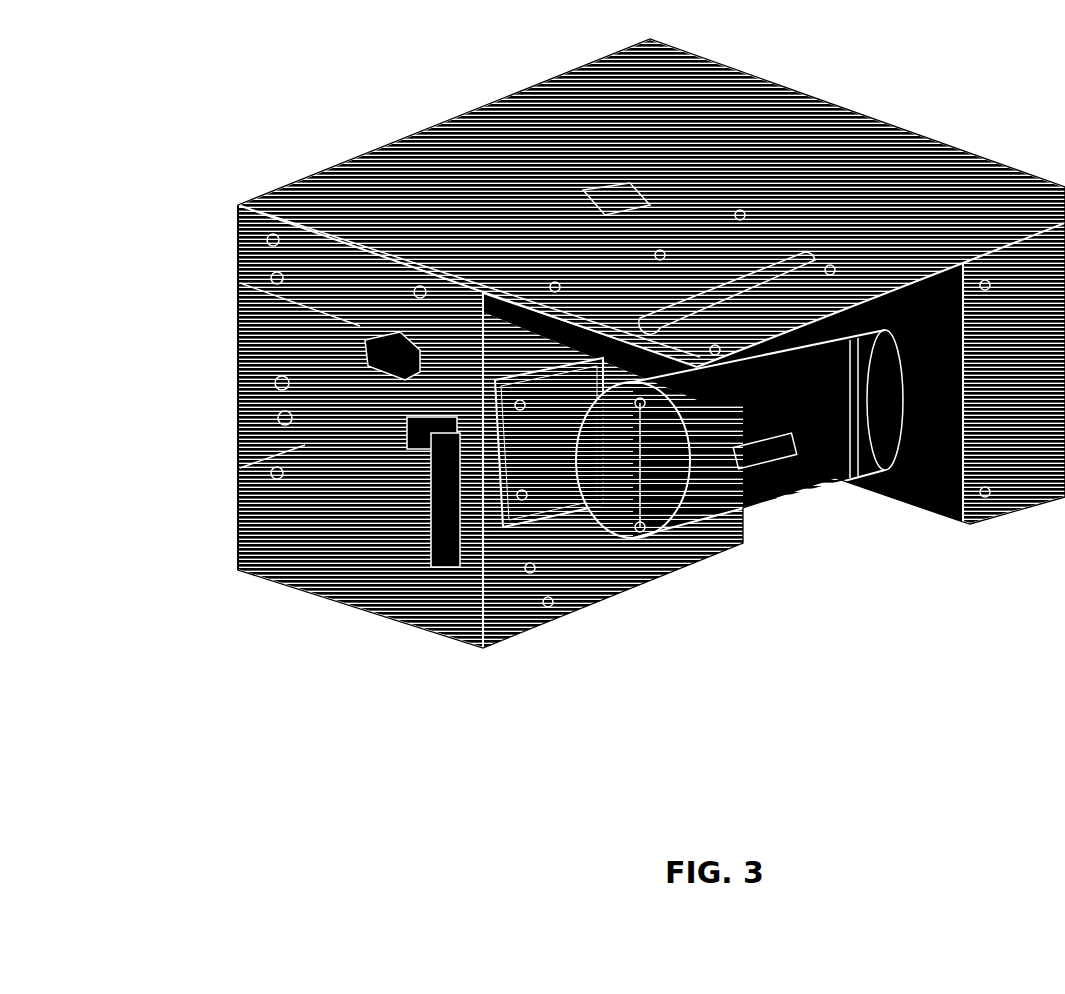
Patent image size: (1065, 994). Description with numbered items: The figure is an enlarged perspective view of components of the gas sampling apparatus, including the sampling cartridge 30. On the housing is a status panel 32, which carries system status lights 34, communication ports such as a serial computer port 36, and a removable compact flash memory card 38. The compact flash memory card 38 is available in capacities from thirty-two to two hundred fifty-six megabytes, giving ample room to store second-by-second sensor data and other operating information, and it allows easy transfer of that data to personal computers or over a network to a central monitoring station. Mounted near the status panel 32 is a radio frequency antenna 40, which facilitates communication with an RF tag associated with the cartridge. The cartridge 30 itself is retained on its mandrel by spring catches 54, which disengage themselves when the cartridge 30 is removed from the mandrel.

The cartridge 30 is at (786, 497).
The status panel 32 is at (240, 468).
The system status lights 34 is at (270, 379).
The RS-232 computer port 36 is at (240, 283).
The compact flash memory card 38 is at (424, 575).
The radio frequency antenna 40 is at (536, 503).
The spring catches 54 is at (965, 525).